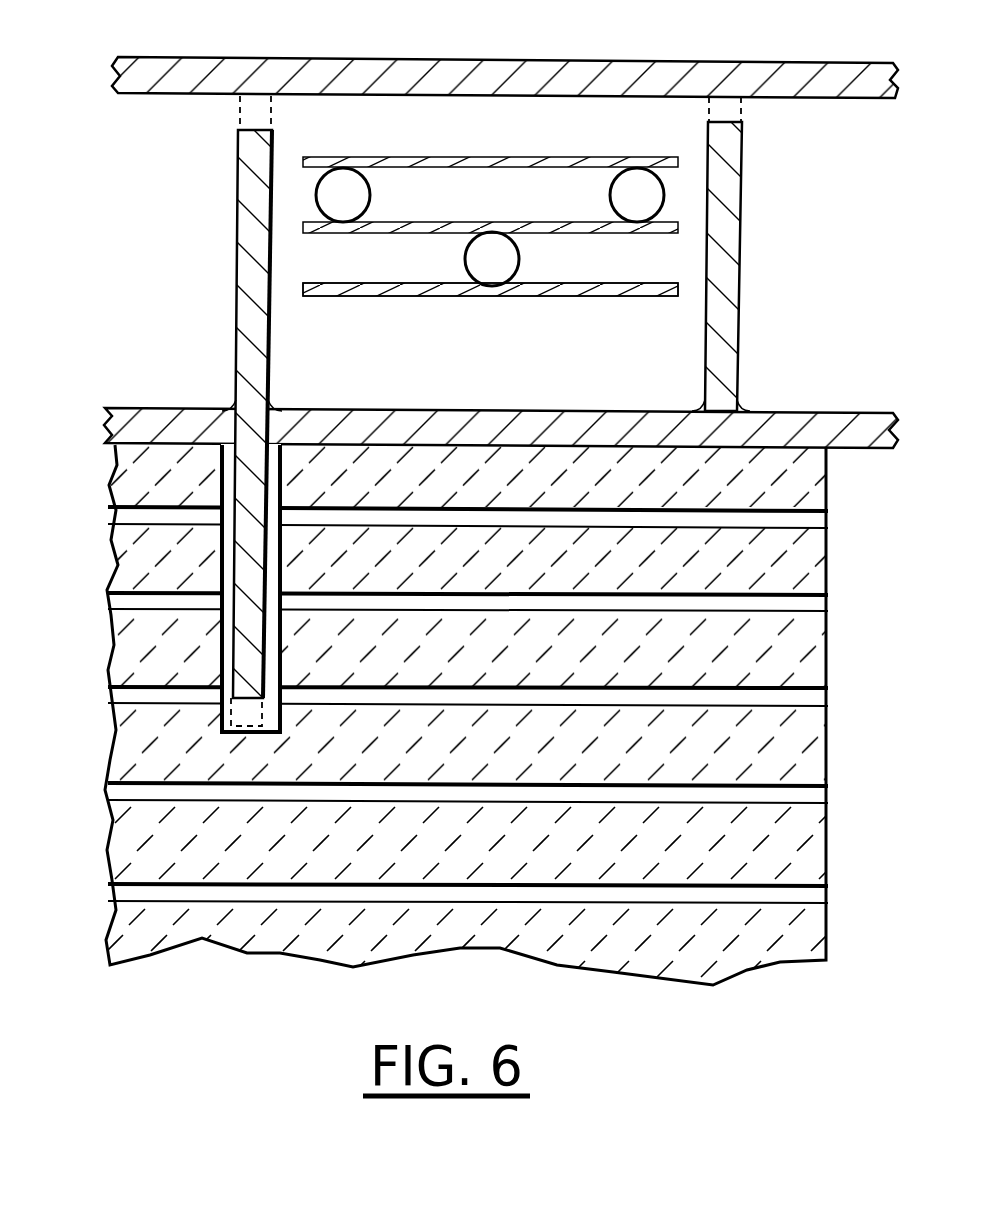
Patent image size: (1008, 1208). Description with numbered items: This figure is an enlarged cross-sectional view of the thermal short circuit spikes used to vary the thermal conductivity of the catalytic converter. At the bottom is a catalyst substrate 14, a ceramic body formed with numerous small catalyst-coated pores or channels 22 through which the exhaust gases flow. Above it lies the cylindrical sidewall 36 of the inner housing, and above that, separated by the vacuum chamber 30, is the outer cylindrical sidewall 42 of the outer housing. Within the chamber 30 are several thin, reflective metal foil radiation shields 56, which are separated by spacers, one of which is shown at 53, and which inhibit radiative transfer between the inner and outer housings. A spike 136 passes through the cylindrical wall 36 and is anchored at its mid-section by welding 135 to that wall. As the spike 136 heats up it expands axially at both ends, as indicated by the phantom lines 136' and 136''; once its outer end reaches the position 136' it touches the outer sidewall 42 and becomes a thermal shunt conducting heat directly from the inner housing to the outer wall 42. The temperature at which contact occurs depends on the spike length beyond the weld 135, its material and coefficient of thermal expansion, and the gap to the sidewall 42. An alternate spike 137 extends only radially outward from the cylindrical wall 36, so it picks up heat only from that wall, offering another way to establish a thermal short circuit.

The outer cylindrical sidewall 42 is at (387, 58).
The spike 136 is at (216, 414).
The phantom line of spike outer end 136' is at (218, 114).
The phantom line of spike inner end 136'' is at (142, 704).
The welding 135 is at (268, 405).
The spike 137 is at (742, 215).
The cylindrical sidewall 36 is at (425, 410).
The vacuum chamber 30 is at (500, 337).
The radiation shields 56 is at (472, 222).
The ball 53 is at (517, 273).
The catalyst-coated pores or channels 22 is at (133, 602).
The catalyst substrate 14 is at (831, 567).